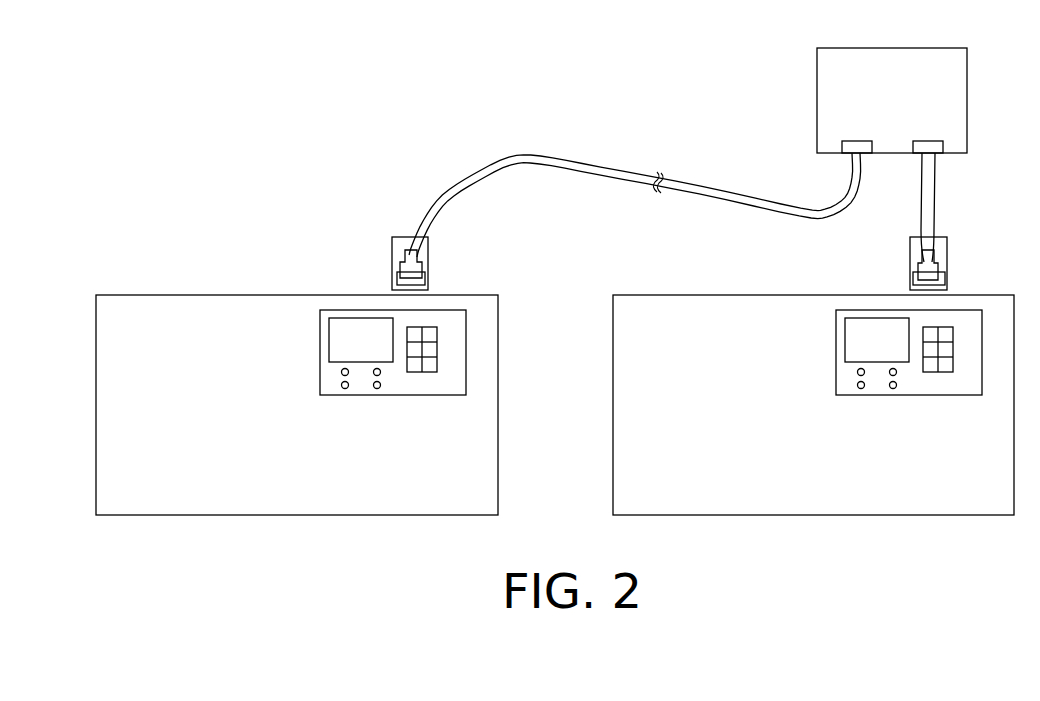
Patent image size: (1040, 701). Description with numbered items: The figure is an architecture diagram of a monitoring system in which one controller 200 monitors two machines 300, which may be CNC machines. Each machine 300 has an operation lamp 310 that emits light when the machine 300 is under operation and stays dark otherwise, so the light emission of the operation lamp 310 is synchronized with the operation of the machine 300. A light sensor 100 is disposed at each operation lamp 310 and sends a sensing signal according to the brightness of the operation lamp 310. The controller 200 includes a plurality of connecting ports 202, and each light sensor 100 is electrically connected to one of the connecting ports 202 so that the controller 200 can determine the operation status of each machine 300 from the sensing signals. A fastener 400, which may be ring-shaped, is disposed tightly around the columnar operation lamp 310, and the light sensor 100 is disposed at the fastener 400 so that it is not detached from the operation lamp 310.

The light sensor 100 is at (427, 266).
The controller 200 is at (898, 46).
The connecting port 202 is at (836, 151).
The machine 300 is at (165, 294).
The operation lamp 310 is at (400, 236).
The fastener 400 is at (397, 278).